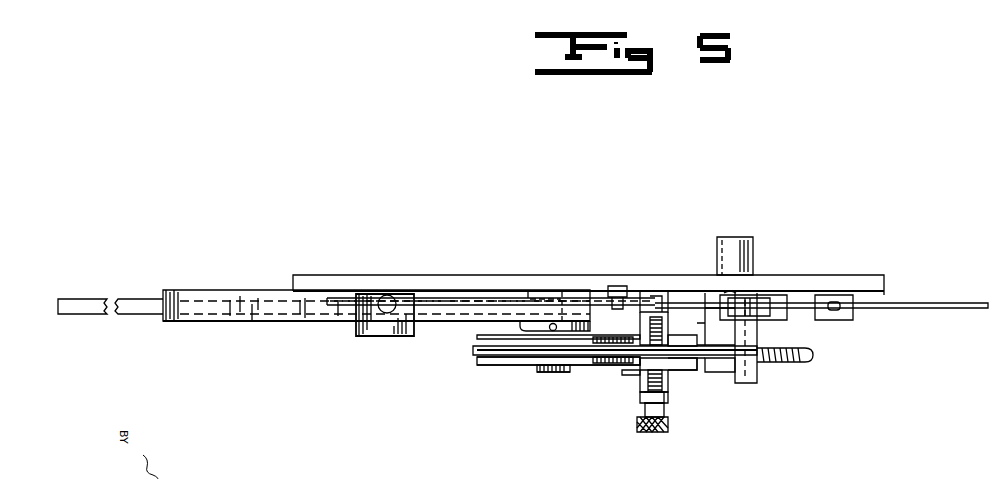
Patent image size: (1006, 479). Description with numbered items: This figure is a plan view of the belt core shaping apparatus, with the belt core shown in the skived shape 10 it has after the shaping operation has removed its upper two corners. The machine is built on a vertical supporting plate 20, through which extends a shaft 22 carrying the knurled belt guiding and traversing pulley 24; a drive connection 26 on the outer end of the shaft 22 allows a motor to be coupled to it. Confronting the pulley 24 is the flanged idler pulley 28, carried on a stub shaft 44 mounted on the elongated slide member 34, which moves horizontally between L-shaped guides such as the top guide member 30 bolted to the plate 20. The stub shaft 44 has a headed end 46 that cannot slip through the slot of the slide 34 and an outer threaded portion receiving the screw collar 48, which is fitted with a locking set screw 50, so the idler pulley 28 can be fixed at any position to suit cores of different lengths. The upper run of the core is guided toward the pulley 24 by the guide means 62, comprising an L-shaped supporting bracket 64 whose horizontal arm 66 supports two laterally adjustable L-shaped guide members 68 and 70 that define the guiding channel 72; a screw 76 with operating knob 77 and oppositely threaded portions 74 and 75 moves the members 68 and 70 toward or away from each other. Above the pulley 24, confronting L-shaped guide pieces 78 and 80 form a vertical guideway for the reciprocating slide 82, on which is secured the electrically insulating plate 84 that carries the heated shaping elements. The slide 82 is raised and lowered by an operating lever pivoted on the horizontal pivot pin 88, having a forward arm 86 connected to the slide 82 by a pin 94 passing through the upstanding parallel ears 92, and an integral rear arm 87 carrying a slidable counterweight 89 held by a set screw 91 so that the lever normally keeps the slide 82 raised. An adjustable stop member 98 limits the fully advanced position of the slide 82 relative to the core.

The skived belt core 10 is at (474, 352).
The vertical supporting plate 20 is at (867, 275).
The shaft 22 is at (718, 372).
The belt guiding and traversing pulley 24 is at (790, 360).
The drive connection 26 is at (718, 236).
The flanged idler pulley 28 is at (513, 364).
The top L-shaped guide member 30 is at (213, 290).
The elongated slide member 34 is at (87, 298).
The stub shaft 44 is at (540, 372).
The headed end 46 is at (563, 292).
The screw collar 48 is at (520, 324).
The locking set screw 50 is at (553, 322).
The guide means 62 is at (628, 371).
The L-shaped supporting bracket 64 is at (648, 298).
The horizontal arm 66 is at (636, 377).
The L-shaped guide member 68 is at (682, 363).
The L-shaped guide member 70 is at (670, 376).
The guiding channel 72 is at (664, 312).
The threaded portion 74 is at (640, 326).
The threaded portion 75 is at (638, 385).
The screw 76 is at (640, 393).
The operating knob 77 is at (646, 433).
The L-shaped guide piece 78 is at (778, 323).
The L-shaped guide piece 80 is at (701, 338).
The vertically reciprocated slide 82 is at (780, 295).
The electrically insulating plate 84 is at (756, 380).
The forward lever arm 86 is at (940, 303).
The rear lever arm 87 is at (437, 298).
The horizontal pivot pin 88 is at (618, 289).
The slidable counterweight 89 is at (377, 338).
The set screw 91 is at (387, 294).
The upstanding parallel ears 92 is at (752, 308).
The pin 94 is at (730, 296).
The adjustable stop member 98 is at (836, 314).